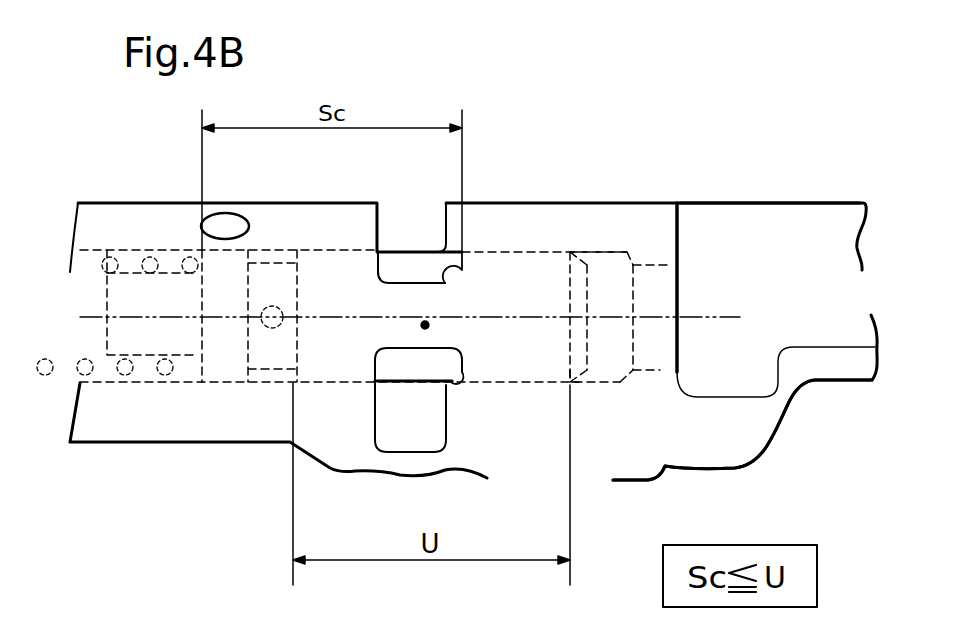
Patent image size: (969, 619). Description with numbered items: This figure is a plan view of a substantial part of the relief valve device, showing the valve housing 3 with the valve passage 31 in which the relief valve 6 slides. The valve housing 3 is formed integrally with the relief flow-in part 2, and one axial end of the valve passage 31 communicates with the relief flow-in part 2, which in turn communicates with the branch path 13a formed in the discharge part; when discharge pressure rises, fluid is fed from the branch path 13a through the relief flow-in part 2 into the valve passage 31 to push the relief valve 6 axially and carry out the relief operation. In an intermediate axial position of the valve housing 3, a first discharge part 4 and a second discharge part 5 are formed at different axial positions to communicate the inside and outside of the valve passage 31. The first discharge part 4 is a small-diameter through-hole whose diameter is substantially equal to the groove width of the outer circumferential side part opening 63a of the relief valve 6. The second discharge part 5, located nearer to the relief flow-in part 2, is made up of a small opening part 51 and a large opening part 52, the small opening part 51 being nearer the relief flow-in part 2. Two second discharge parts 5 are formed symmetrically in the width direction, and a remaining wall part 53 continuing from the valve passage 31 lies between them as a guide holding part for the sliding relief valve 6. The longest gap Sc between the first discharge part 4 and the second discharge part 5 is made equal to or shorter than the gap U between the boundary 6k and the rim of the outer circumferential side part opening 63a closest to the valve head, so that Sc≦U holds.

The relief flow-in part 2 is at (663, 288).
The valve housing 3 is at (614, 204).
The first discharge part 4 is at (220, 228).
The second discharge part 5 is at (413, 239).
The relief valve 6 is at (587, 288).
The boundary 6k is at (572, 382).
The branch path 13a is at (802, 243).
The valve passage 31 is at (645, 346).
The small opening part 51 is at (443, 289).
The large opening part 52 is at (402, 268).
The remaining wall part 53 is at (425, 325).
The outer circumferential side part opening 63a is at (271, 262).